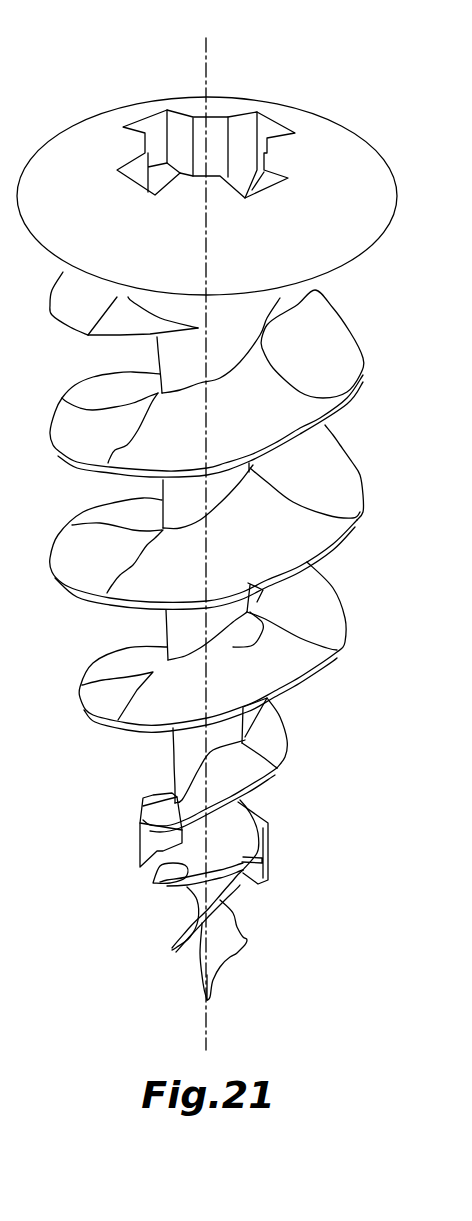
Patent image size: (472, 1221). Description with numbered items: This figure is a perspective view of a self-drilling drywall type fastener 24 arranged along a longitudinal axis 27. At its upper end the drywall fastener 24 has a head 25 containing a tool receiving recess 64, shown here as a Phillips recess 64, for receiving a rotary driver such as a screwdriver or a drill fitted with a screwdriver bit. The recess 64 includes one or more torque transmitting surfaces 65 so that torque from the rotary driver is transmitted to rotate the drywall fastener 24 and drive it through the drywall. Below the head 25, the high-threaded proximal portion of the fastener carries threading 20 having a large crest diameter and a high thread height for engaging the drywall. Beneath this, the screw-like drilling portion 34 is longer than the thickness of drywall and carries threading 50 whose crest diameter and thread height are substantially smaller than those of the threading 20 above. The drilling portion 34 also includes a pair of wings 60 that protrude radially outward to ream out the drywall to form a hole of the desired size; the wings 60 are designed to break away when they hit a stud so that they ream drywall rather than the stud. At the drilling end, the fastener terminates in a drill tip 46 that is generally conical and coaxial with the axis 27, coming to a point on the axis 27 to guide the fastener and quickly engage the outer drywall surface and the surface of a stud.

The drywall fastener 24 is at (340, 103).
The head 25 is at (348, 225).
The recess 64 is at (213, 127).
The torque transmitting surfaces 65 is at (147, 133).
The threading 20 is at (360, 515).
The drilling portion 34 is at (208, 858).
The wing 60 is at (137, 842).
The threading 50 is at (153, 883).
The drill tip 46 is at (205, 988).
The axis 27 is at (207, 1050).